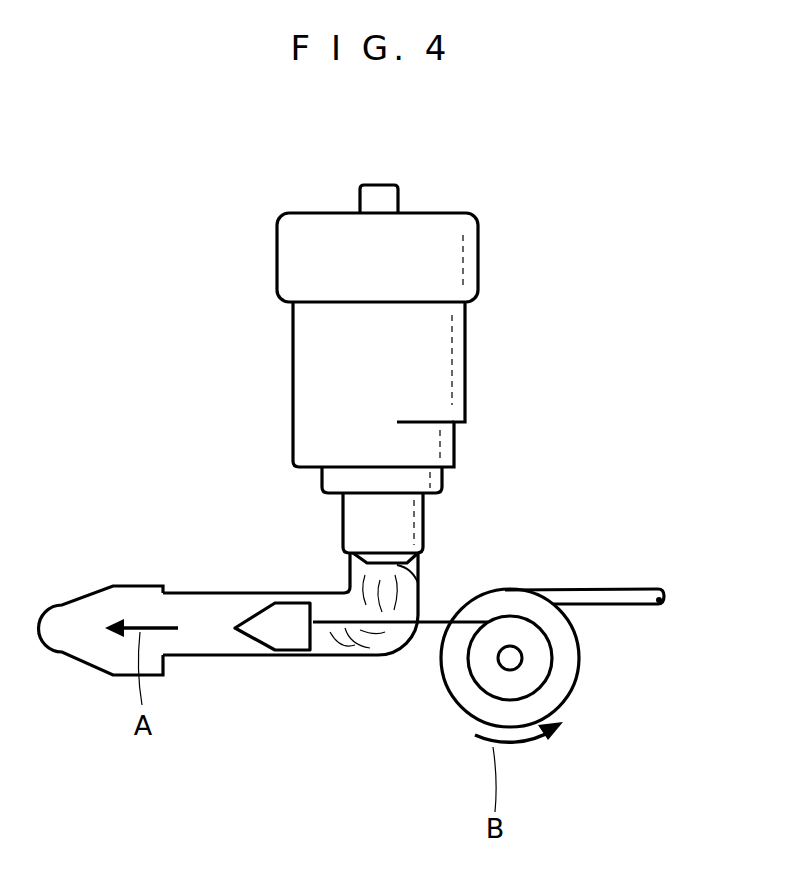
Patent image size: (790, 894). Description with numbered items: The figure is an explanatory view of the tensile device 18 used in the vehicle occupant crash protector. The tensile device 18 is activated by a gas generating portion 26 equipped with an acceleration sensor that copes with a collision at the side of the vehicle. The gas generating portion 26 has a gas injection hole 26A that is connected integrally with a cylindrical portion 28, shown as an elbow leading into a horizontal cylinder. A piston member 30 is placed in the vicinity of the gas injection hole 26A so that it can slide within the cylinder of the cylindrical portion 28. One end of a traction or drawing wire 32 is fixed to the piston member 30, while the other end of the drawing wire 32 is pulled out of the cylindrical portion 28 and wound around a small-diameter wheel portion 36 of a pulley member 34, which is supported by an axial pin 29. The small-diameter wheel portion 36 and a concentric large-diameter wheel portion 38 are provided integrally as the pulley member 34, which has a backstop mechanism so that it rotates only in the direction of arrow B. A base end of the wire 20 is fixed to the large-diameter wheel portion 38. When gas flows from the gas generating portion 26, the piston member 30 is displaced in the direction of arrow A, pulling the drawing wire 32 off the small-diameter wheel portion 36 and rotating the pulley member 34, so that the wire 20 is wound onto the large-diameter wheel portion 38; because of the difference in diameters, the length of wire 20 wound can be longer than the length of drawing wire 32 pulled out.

The tensile device 18 is at (516, 478).
The wire 20 is at (628, 590).
The gas generating portion 26 is at (307, 375).
The gas injection hole 26A is at (420, 588).
The cylindrical portion 28 is at (223, 593).
The axial pin 29 is at (502, 667).
The piston member 30 is at (280, 635).
The drawing wire 32 is at (437, 625).
The pulley member 34 is at (549, 696).
The small-diameter wheel portion 36 is at (535, 648).
The large-diameter wheel portion 38 is at (557, 690).